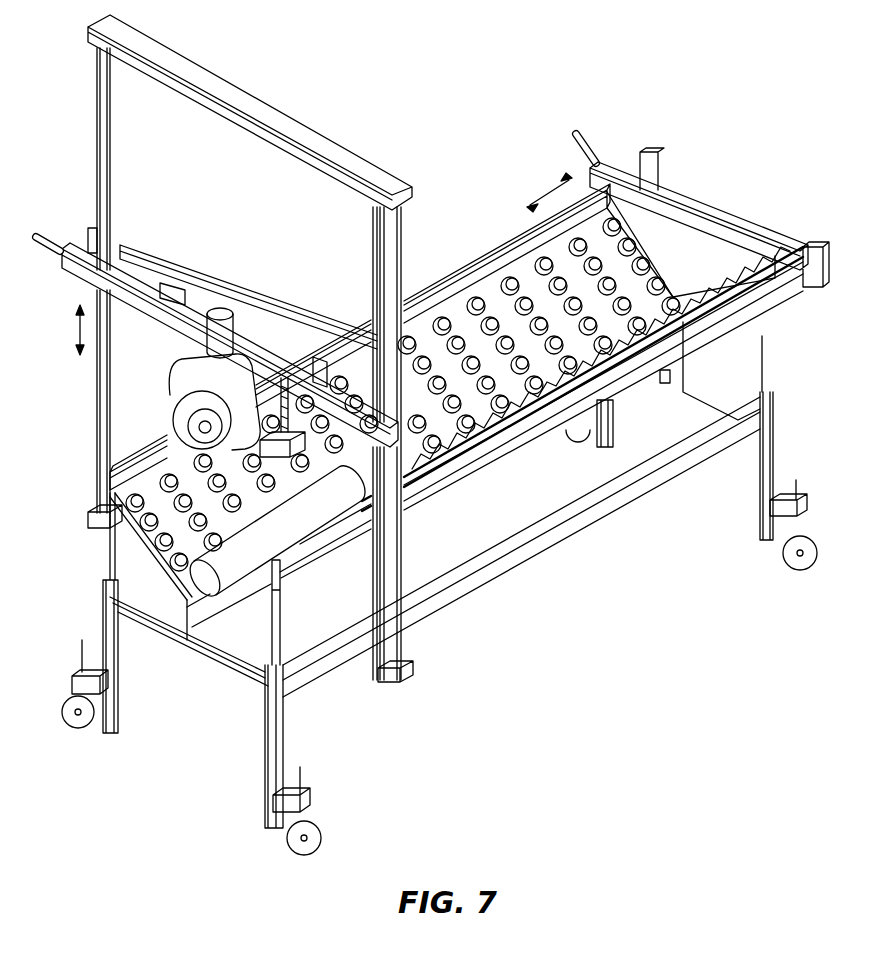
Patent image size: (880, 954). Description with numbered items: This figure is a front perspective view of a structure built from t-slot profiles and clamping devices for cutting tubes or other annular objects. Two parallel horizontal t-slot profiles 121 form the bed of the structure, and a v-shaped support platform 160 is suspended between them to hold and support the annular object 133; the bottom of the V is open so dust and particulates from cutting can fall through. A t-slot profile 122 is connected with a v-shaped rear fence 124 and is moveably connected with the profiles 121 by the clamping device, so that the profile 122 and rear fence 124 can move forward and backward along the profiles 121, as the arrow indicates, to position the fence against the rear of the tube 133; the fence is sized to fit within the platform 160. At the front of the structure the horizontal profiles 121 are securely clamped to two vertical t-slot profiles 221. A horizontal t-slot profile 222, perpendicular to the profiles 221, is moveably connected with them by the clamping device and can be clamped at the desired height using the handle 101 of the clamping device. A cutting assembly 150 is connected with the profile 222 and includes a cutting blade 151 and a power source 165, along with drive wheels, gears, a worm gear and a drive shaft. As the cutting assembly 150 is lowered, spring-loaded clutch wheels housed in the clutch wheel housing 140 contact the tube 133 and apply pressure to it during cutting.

The handle 101 is at (42, 238).
The t-slot profiles 121 is at (525, 248).
The t-slot profile 122 is at (757, 250).
The rear fence 124 is at (680, 252).
The annular object 133 is at (213, 592).
The clutch wheel housing 140 is at (283, 380).
The cutting assembly 150 is at (240, 375).
The cutting blade 151 is at (195, 437).
The support platform 160 is at (495, 305).
The power source 165 is at (221, 313).
The vertical t-slot profiles 221 is at (117, 140).
The t-slot profile 222 is at (137, 302).